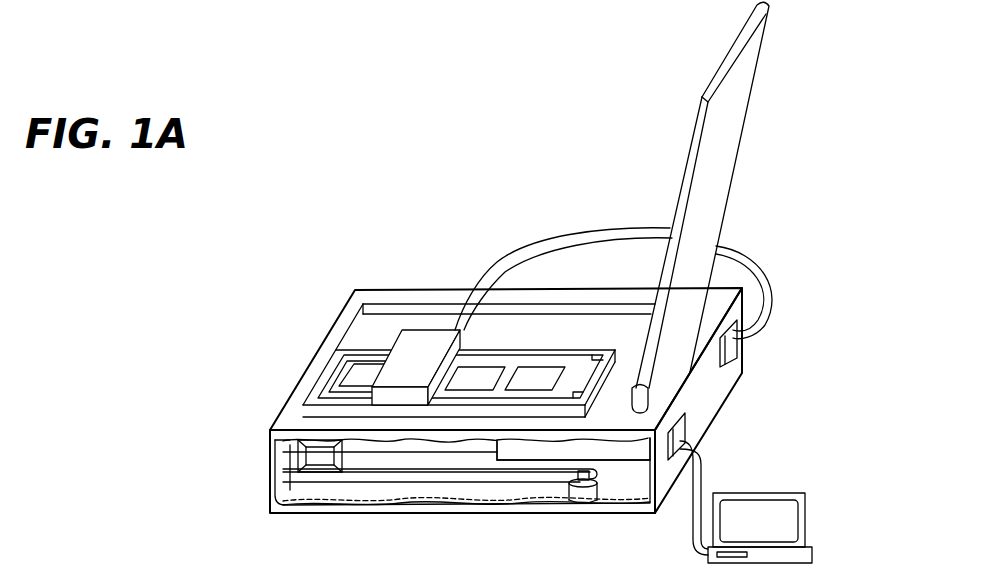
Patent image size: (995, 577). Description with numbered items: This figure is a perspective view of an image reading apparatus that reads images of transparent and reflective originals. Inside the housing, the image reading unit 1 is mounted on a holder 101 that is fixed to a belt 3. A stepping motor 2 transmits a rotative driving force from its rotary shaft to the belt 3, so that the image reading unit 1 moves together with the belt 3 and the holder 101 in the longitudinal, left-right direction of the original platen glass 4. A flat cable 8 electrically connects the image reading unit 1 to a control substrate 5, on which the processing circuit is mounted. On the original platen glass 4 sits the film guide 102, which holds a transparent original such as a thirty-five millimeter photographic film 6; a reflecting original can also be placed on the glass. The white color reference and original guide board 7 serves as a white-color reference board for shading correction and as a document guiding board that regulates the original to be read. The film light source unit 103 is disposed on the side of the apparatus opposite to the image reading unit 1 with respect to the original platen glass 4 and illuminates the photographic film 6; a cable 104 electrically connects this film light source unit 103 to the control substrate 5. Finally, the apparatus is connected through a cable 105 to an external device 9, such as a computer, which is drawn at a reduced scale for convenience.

The image reading unit 1 is at (313, 453).
The stepping motor 2 is at (580, 503).
The belt 3 is at (431, 477).
The original platen glass 4 is at (566, 326).
The control substrate 5 is at (533, 443).
The photographic film 6 is at (360, 377).
The white color reference and original guide board 7 is at (285, 418).
The flat cable 8 is at (385, 450).
The external device 9 is at (760, 493).
The holder 101 is at (350, 457).
The film guide 102 is at (500, 348).
The film light source unit 103 is at (417, 338).
The cable 104 is at (590, 228).
The cable 105 is at (703, 470).